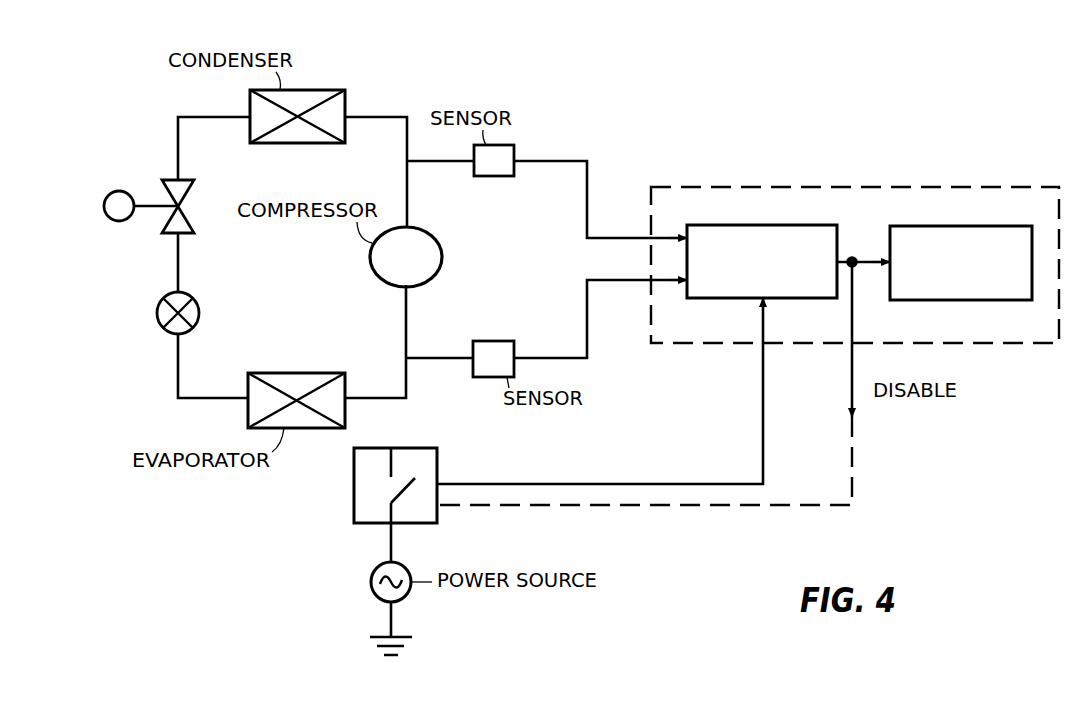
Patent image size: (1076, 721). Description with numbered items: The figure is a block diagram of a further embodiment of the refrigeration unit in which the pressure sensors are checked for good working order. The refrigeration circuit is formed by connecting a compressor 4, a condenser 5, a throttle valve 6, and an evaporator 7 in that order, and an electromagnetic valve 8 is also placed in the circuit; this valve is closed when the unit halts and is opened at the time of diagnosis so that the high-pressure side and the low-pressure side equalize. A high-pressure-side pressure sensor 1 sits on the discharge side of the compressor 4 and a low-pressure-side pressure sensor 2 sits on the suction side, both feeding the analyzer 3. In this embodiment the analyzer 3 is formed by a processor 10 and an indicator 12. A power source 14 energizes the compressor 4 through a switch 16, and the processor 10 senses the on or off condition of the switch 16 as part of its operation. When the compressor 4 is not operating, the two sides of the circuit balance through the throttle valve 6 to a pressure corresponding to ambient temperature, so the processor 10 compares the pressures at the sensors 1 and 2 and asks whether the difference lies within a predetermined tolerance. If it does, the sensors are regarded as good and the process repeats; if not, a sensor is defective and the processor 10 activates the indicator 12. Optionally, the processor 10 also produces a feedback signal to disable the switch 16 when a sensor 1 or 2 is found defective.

The high-pressure-side pressure sensor 1 is at (515, 149).
The low-pressure-side pressure sensor 2 is at (477, 377).
The analyzer 3 is at (718, 186).
The compressor 4 is at (440, 249).
The condenser 5 is at (337, 90).
The throttle valve 6 is at (157, 310).
The evaporator 7 is at (307, 428).
The electromagnetic valve 8 is at (104, 206).
The processor 10 is at (760, 225).
The indicator 12 is at (988, 226).
The power source 14 is at (371, 582).
The switch 16 is at (354, 499).